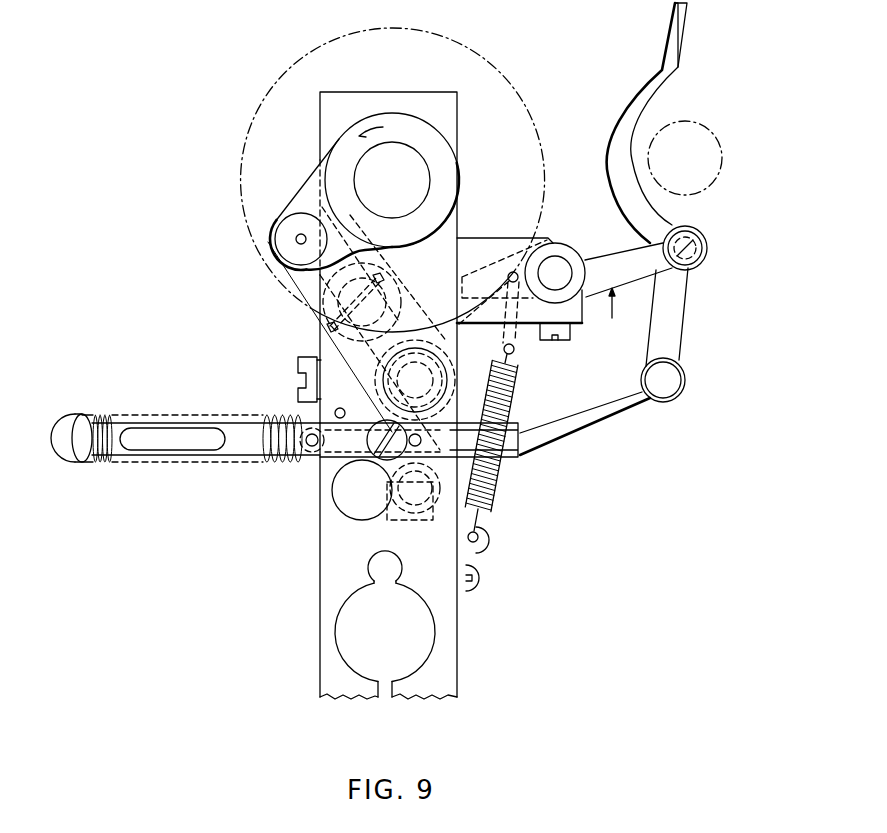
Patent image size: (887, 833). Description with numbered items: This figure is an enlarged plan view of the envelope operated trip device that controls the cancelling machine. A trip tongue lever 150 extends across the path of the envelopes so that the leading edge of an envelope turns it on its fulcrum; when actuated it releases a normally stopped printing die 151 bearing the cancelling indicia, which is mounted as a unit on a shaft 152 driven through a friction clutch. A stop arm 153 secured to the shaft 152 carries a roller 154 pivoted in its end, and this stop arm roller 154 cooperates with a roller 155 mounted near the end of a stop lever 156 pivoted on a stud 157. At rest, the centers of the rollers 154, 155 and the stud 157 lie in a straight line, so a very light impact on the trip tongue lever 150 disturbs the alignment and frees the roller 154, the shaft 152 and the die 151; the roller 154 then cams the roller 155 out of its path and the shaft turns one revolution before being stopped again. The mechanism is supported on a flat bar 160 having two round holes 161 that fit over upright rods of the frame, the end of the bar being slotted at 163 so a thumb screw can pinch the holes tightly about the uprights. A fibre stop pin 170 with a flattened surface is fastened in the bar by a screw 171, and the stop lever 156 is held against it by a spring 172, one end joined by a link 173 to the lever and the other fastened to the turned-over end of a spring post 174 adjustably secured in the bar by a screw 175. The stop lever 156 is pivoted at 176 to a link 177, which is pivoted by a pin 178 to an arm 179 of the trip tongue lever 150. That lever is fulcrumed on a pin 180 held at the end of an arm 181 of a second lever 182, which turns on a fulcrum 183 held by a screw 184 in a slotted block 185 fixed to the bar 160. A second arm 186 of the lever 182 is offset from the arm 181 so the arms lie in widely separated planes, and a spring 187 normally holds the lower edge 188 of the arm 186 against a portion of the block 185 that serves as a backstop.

The trip tongue lever 150 is at (677, 50).
The printing die 151 is at (522, 100).
The shaft 152 is at (398, 148).
The stop arm 153 is at (313, 172).
The stop arm roller 154 is at (272, 252).
The roller 155 is at (311, 309).
The stop lever 156 is at (325, 335).
The stud 157 is at (298, 388).
The flat bar 160 is at (458, 605).
The round holes 161 is at (425, 645).
The slot 163 is at (389, 686).
The fibre stop pin 170 is at (352, 508).
The screw 171 is at (495, 500).
The spring 172 is at (112, 462).
The link 173 is at (297, 462).
The spring post 174 is at (56, 458).
The screw 175 is at (386, 425).
The pivot 176 is at (432, 512).
The link 177 is at (602, 411).
The pin 178 is at (687, 386).
The arm 179 is at (678, 298).
The pin 180 is at (707, 250).
The arm 181 is at (608, 257).
The second lever 182 is at (619, 313).
The fulcrum 183 is at (552, 257).
The screw 184 is at (560, 341).
The slotted block 185 is at (468, 238).
The second arm 186 is at (490, 264).
The spring 187 is at (517, 396).
The lower edge 188 is at (488, 308).